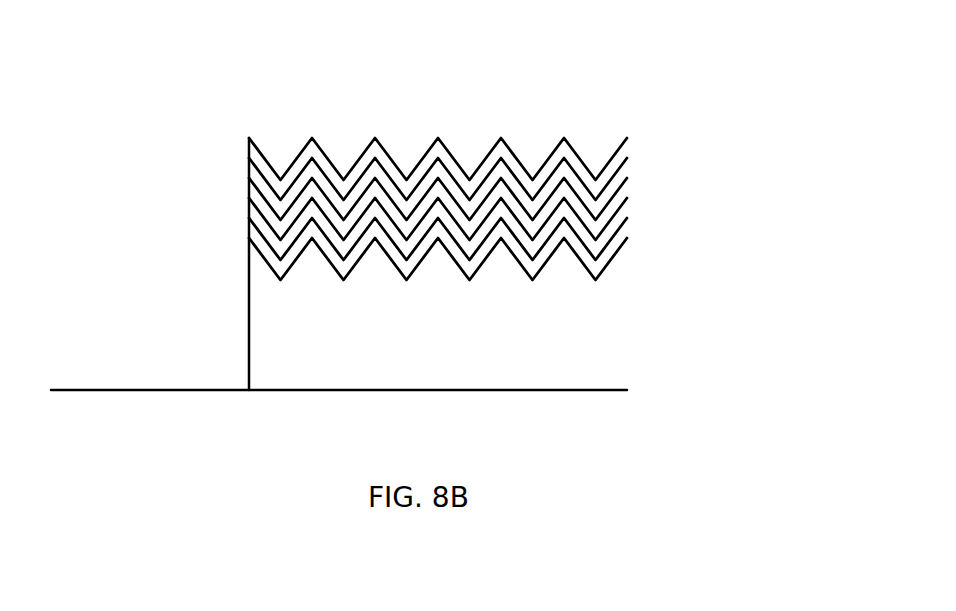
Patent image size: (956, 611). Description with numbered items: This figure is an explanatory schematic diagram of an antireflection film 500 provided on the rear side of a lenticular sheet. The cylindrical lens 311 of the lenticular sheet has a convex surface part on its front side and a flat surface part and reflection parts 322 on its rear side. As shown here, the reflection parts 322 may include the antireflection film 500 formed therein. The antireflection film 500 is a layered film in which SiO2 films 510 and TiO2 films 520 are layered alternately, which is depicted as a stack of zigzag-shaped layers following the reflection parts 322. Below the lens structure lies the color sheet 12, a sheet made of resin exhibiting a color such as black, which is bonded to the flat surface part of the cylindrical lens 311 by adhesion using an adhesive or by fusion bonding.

The antireflection film 500 is at (442, 63).
The TiO2 film 520 is at (423, 233).
The SiO2 film 510 is at (492, 237).
The cylindrical lens 311 is at (603, 117).
The reflection part 322 is at (605, 170).
The color sheet 12 is at (583, 425).